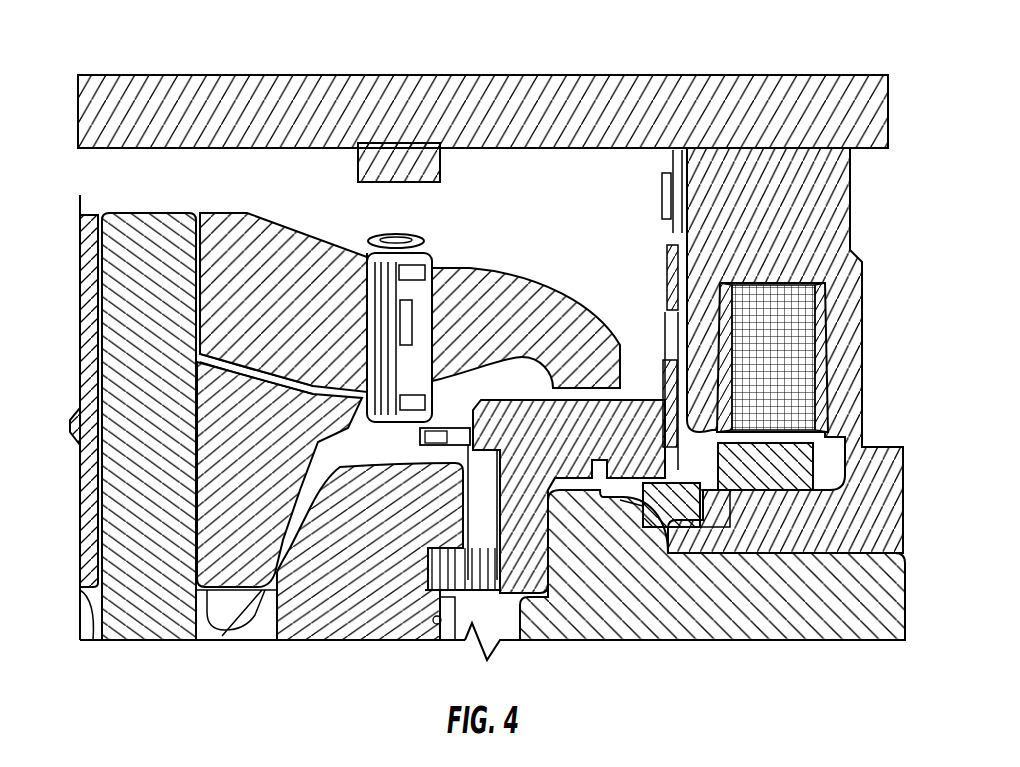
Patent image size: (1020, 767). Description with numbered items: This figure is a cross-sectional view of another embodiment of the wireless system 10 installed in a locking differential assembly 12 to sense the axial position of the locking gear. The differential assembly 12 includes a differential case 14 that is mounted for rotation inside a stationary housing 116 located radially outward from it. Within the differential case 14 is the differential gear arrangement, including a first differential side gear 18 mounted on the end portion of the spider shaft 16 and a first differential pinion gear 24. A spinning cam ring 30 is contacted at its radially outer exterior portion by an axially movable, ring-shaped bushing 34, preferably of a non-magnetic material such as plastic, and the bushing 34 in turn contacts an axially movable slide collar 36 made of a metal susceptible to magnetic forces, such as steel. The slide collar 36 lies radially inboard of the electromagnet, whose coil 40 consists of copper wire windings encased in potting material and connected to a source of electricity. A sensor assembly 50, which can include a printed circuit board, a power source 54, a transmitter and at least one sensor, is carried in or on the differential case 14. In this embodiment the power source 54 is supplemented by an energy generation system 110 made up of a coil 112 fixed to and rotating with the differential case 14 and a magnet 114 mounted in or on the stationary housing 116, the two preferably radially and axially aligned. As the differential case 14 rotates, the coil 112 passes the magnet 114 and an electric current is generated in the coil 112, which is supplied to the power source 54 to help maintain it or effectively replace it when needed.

The wireless system 10 is at (562, 240).
The locking differential assembly 12 is at (76, 197).
The differential case 14 is at (263, 307).
The spider shaft 16 is at (726, 612).
The first differential side gear 18 is at (360, 541).
The first differential pinion gear 24 is at (228, 492).
The cam ring 30 is at (521, 451).
The bushing 34 is at (660, 514).
The slide collar 36 is at (751, 479).
The coil 40 is at (758, 359).
The sensor assembly 50 is at (438, 268).
The power source 54 is at (368, 255).
The energy generation system 110 is at (262, 184).
The coil 112 is at (424, 240).
The magnet 114 is at (392, 162).
The stationary housing 116 is at (222, 122).